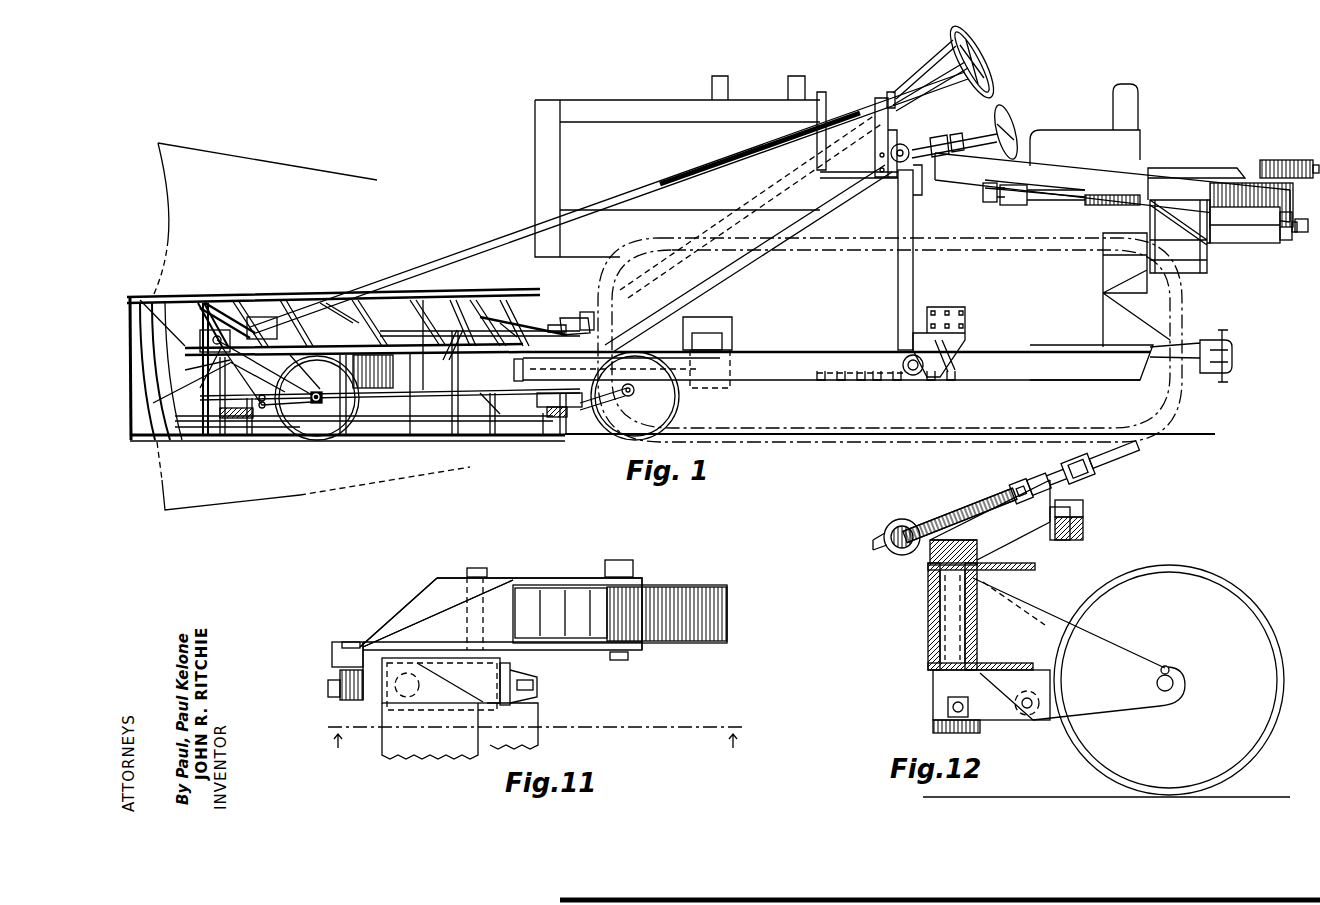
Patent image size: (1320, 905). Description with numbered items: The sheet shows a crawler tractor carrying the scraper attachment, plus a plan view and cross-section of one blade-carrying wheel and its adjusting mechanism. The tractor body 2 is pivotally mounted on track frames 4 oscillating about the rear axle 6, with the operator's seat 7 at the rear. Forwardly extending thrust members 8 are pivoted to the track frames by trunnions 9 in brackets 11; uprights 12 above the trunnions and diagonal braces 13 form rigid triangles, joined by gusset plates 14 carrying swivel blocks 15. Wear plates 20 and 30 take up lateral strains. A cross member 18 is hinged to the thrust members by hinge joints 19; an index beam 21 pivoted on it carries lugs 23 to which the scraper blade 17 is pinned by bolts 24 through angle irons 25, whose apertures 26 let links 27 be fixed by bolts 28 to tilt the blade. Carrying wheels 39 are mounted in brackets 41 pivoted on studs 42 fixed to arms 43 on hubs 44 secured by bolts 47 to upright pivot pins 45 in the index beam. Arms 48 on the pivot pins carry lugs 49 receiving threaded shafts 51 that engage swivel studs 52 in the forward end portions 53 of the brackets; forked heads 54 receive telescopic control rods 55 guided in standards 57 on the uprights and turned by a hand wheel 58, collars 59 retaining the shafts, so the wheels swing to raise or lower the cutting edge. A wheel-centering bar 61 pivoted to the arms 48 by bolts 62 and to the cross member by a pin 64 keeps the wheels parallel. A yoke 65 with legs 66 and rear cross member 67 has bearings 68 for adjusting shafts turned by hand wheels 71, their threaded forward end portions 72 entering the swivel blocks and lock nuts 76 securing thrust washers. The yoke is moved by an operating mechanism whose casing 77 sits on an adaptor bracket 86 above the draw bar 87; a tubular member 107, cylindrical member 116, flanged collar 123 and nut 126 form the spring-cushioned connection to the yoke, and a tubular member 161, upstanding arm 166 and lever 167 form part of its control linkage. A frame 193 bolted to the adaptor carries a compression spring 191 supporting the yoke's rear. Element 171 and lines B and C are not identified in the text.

In FIG. 1, the body 2 is at (622, 133).
In FIG. 1, the track frames 4 is at (1103, 372).
In FIG. 1, the rear axle 6 is at (1076, 337).
In FIG. 1, the operator's seat 7 is at (1085, 133).
In FIG. 1, the thrust members 8 is at (780, 363).
In FIG. 1, the trunnions 9 is at (910, 376).
In FIG. 1, the brackets 11 is at (953, 347).
In FIG. 1, the uprights 12 is at (915, 288).
In FIG. 11, the uprights 12 is at (534, 730).
In FIG. 1, the diagonal braces 13 is at (757, 250).
In FIG. 1, the gusset plates 14 is at (890, 185).
In FIG. 1, the swivel blocks 15 is at (904, 147).
In FIG. 1, the scraper blade 17 is at (262, 158).
In FIG. 1, the cross member 18 is at (443, 383).
In FIG. 1, the hinge joints 19 is at (513, 367).
In FIG. 1, the wear plates 20 is at (732, 320).
In FIG. 1, the index beam 21 is at (373, 420).
In FIG. 11, the index beam 21 is at (410, 758).
In FIG. 12, the index beam 21 is at (928, 632).
In FIG. 1, the lugs 23 is at (517, 337).
In FIG. 1, the pins or bolts 24 is at (223, 407).
In FIG. 1, the angle irons 25 is at (160, 400).
In FIG. 1, the spaced apertures 26 is at (198, 297).
In FIG. 1, the links 27 is at (237, 297).
In FIG. 1, the bolts 28 is at (317, 320).
In FIG. 1, the wear plates 30 is at (722, 342).
In FIG. 1, the carrying wheels 39 is at (330, 427).
In FIG. 11, the carrying wheels 39 is at (727, 587).
In FIG. 12, the carrying wheels 39 is at (1215, 590).
In FIG. 1, the brackets 41 is at (293, 400).
In FIG. 11, the brackets 41 is at (553, 578).
In FIG. 12, the brackets 41 is at (1053, 623).
In FIG. 11, the studs 42 is at (480, 567).
In FIG. 12, the studs 42 is at (1028, 708).
In FIG. 1, the arms 43 is at (250, 420).
In FIG. 11, the arms 43 is at (505, 652).
In FIG. 12, the arms 43 is at (1007, 717).
In FIG. 12, the hubs 44 is at (933, 677).
In FIG. 11, the upright pivot pins 45 is at (413, 697).
In FIG. 12, the upright pivot pins 45 is at (973, 642).
In FIG. 12, the bolts 47 is at (948, 707).
In FIG. 1, the arms 48 is at (257, 355).
In FIG. 11, the arms 48 is at (450, 698).
In FIG. 12, the arms 48 is at (1027, 540).
In FIG. 1, the lugs 49 is at (275, 297).
In FIG. 11, the lugs 49 is at (503, 707).
In FIG. 12, the lugs 49 is at (1040, 478).
In FIG. 1, the threaded shafts 51 is at (263, 325).
In FIG. 11, the threaded shafts 51 is at (328, 690).
In FIG. 12, the threaded shafts 51 is at (952, 512).
In FIG. 11, the swivel studs 52 is at (340, 672).
In FIG. 12, the swivel studs 52 is at (893, 523).
In FIG. 1, the forward end portions 53 is at (230, 363).
In FIG. 11, the forward end portions 53 is at (332, 648).
In FIG. 12, the forward end portions 53 is at (910, 568).
In FIG. 12, the forked heads 54 is at (1093, 480).
In FIG. 1, the telescopic control rods 55 is at (485, 243).
In FIG. 12, the telescopic control rods 55 is at (1135, 458).
In FIG. 1, the standards 57 is at (875, 145).
In FIG. 1, the hand wheel 58 is at (977, 40).
In FIG. 12, the collars 59 is at (1027, 475).
In FIG. 1, the wheel-centering bar 61 is at (410, 337).
In FIG. 11, the wheel-centering bar 61 is at (533, 712).
In FIG. 12, the wheel-centering bar 61 is at (1083, 528).
In FIG. 1, the bolts 62 is at (313, 392).
In FIG. 11, the bolts 62 is at (537, 683).
In FIG. 12, the bolts 62 is at (1083, 510).
In FIG. 1, the pin 64 is at (452, 358).
In FIG. 1, the yoke 65 is at (1130, 161).
In FIG. 1, the legs 66 is at (1050, 172).
In FIG. 1, the rear cross member 67 is at (1293, 207).
In FIG. 1, the bearings 68 is at (935, 138).
In FIG. 1, the hand wheels 71 is at (1012, 112).
In FIG. 1, the forward end portions 72 is at (920, 166).
In FIG. 1, the lock nuts 76 is at (958, 136).
In FIG. 1, the casing 77 is at (1206, 274).
In FIG. 1, the adaptor bracket 86 is at (1117, 268).
In FIG. 1, the draw bar 87 is at (1232, 356).
In FIG. 1, the tubular member 107 is at (1240, 247).
In FIG. 1, the cylindrical member 116 is at (1283, 243).
In FIG. 1, the flanged collar 123 is at (1280, 243).
In FIG. 1, the nut 126 is at (1299, 232).
In FIG. 1, the tubular member 161 is at (1022, 205).
In FIG. 1, the upstanding arm 166 is at (983, 190).
In FIG. 1, the lever 167 is at (1005, 205).
In FIG. 1, the link pin 171 is at (983, 200).
In FIG. 1, the compression spring 191 is at (1281, 160).
In FIG. 1, the frame 193 is at (1210, 168).
In FIG. 1, the blade top line B is at (297, 165).
In FIG. 1, the ground reference line C is at (243, 503).